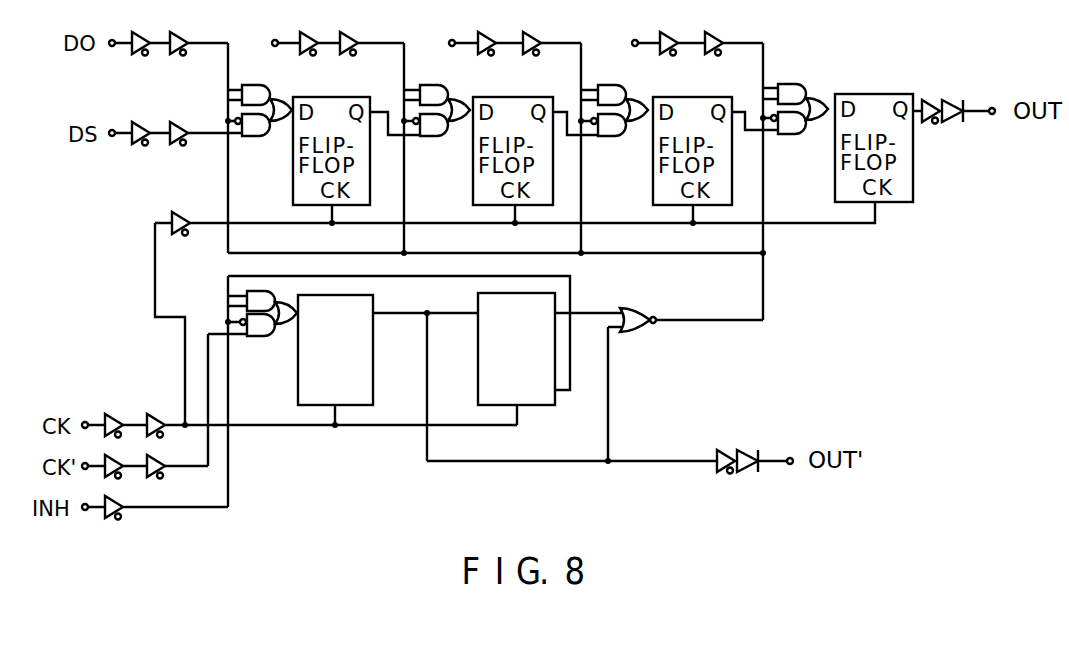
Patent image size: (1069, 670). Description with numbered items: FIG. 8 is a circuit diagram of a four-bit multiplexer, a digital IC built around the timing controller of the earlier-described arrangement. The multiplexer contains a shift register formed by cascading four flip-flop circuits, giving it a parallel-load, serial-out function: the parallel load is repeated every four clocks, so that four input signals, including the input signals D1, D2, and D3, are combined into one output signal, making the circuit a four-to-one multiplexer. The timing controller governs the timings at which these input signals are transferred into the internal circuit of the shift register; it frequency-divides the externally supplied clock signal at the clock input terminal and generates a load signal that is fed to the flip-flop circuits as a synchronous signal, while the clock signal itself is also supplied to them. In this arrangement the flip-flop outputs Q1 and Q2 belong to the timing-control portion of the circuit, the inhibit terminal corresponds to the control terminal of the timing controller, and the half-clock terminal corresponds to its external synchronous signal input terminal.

The input signal D1 is at (320, 142).
The input signal D2 is at (495, 142).
The input signal D3 is at (676, 176).
The first control flip-flop output Q1 is at (362, 350).
The second control flip-flop output Q2 is at (550, 349).